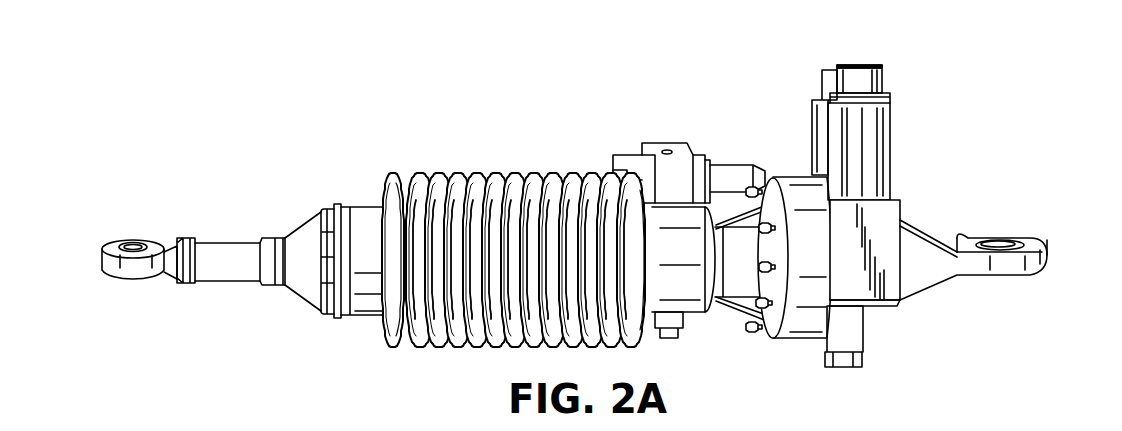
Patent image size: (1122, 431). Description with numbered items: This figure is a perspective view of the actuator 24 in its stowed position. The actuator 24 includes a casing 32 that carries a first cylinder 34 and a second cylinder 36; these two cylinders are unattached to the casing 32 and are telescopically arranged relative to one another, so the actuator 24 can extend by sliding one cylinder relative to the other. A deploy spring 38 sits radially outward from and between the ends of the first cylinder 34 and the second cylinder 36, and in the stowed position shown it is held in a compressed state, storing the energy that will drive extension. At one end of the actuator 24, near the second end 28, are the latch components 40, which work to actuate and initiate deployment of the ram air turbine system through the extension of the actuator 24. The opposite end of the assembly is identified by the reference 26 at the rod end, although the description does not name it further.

The actuator 24 is at (574, 219).
The rod end / tie rod 26 is at (203, 232).
The second end 28 is at (983, 223).
The casing 32 is at (768, 167).
The first cylinder 34 is at (693, 297).
The second cylinder 36 is at (362, 303).
The deploy spring 38 is at (440, 177).
The latch components 40 is at (903, 198).